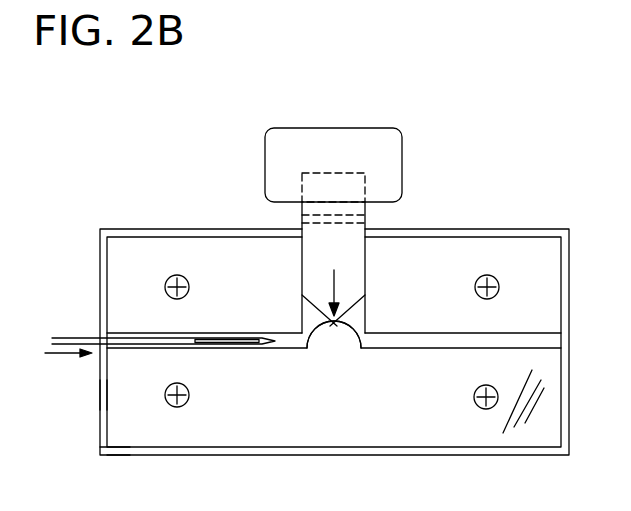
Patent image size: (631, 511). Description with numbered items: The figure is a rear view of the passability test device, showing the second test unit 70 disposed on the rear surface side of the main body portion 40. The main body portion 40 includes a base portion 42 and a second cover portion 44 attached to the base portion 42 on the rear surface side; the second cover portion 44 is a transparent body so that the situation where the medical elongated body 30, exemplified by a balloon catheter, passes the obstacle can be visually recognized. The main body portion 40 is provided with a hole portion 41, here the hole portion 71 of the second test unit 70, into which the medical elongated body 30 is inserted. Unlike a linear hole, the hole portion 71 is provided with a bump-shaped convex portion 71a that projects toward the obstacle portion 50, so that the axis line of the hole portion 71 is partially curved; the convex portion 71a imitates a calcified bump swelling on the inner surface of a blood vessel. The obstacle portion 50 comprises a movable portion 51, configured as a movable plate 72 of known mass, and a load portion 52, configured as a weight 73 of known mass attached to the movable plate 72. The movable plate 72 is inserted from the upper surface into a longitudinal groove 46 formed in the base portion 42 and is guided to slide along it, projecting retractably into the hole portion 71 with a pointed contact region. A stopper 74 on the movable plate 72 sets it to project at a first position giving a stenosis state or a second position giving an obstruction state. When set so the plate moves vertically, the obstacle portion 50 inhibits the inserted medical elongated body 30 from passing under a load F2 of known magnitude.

The second test unit 70 is at (93, 216).
The main body portion 40 is at (99, 278).
The base portion 42 is at (103, 392).
The second cover portion 44 is at (117, 439).
The hole portion 41 is at (296, 403).
The longitudinal groove 46 is at (306, 259).
The hole portion 71 is at (285, 340).
The convex portion 71a is at (353, 330).
The load F2 is at (337, 289).
The weight 73 is at (392, 172).
The movable plate 72 is at (347, 268).
The stopper 74 is at (368, 222).
The load portion 52 is at (466, 167).
The movable portion 51 is at (466, 205).
The obstacle portion 50 is at (530, 155).
The medical elongated body 30 is at (230, 346).